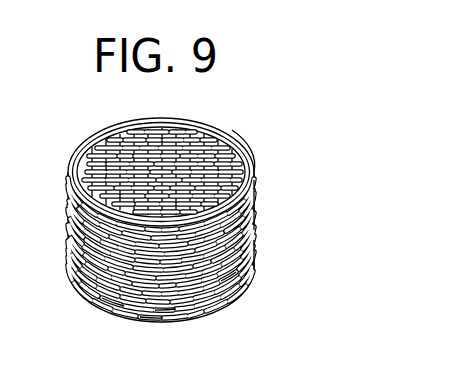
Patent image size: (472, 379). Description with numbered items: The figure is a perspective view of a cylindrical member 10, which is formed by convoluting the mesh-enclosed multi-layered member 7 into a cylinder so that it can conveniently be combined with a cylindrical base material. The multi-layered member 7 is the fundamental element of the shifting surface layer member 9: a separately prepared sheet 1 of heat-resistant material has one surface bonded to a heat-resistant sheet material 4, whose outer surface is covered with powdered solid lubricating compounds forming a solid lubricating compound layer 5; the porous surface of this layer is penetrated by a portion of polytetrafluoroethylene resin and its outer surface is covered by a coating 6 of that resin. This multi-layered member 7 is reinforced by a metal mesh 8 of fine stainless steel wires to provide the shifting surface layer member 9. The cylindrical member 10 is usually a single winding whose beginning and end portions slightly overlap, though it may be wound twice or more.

The sheet 1 is at (203, 130).
The shifting surface layer member 9 is at (257, 159).
The cylindrical member 10 is at (263, 203).
The coating 6 is at (254, 255).
The solid lubricating compound layer 5 is at (222, 288).
The heat-resistant sheet material 4 is at (168, 312).
The multi-layered member 7 is at (148, 315).
The metal mesh 8 is at (122, 313).